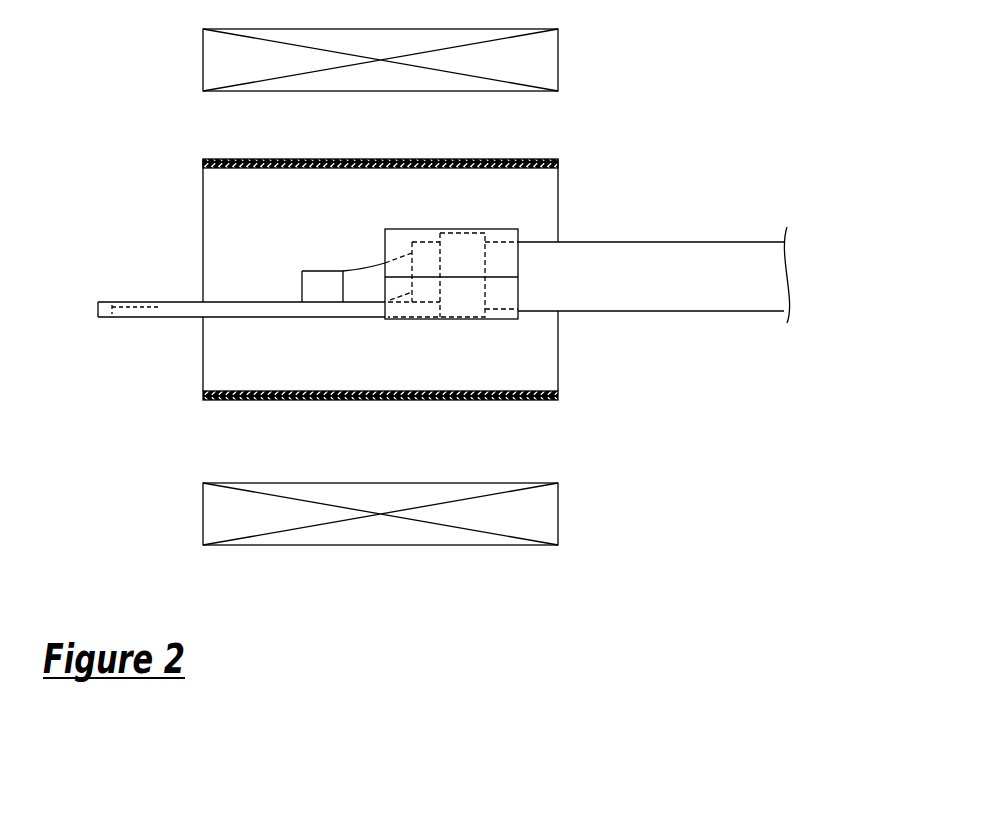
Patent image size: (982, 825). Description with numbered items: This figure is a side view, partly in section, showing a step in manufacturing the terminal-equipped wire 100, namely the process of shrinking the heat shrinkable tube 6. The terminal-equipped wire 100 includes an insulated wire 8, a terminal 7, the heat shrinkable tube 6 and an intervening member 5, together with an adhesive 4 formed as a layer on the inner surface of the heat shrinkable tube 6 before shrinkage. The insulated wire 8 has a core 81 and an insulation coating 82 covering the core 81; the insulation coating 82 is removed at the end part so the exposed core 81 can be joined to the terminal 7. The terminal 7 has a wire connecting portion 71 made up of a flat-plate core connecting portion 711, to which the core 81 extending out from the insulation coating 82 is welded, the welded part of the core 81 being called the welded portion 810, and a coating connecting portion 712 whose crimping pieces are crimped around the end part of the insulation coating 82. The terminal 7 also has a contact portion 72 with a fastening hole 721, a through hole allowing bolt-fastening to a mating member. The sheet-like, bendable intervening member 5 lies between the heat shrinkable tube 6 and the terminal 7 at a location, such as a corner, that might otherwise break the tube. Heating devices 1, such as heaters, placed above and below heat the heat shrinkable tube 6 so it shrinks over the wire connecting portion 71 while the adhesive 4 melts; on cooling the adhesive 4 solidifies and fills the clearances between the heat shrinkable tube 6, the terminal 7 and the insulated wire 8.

The heating device 1 is at (559, 59).
The adhesive 4 is at (545, 168).
The intervening member 5 is at (518, 265).
The heat shrinkable tube 6 is at (548, 161).
The terminal 7 is at (277, 347).
The insulated wire 8 is at (744, 228).
The wire connecting portion 71 is at (345, 358).
The contact portion 72 is at (174, 301).
The core 81 is at (360, 280).
The insulation coating 82 is at (423, 252).
The terminal-equipped wire 100 is at (667, 186).
The core connecting portion 711 is at (365, 312).
The coating connecting portion 712 is at (457, 300).
The fastening hole 721 is at (155, 308).
The welded portion 810 is at (313, 280).